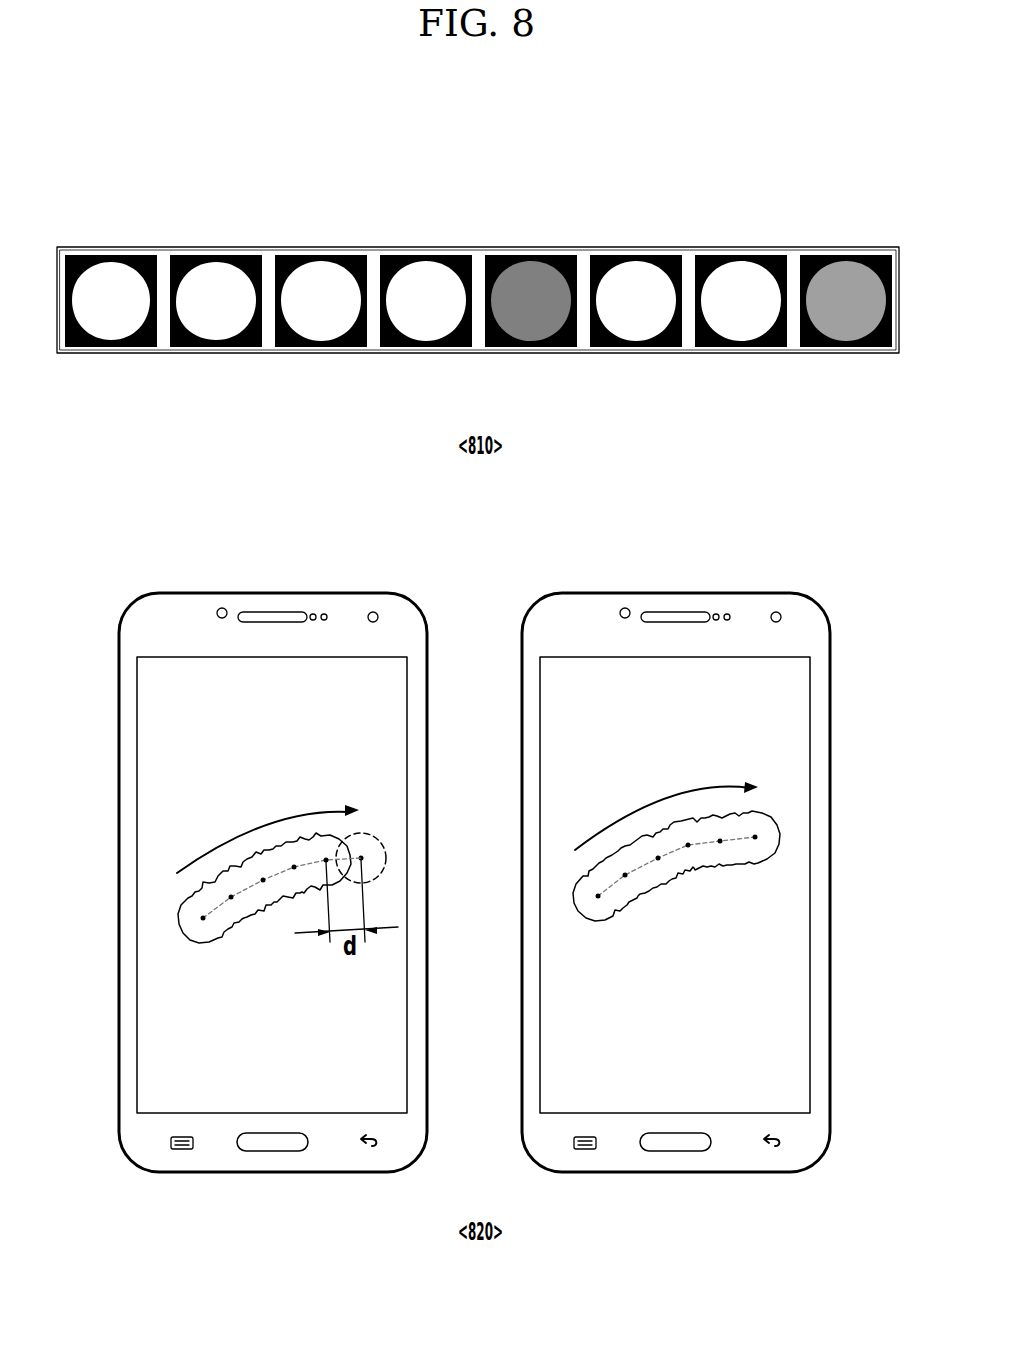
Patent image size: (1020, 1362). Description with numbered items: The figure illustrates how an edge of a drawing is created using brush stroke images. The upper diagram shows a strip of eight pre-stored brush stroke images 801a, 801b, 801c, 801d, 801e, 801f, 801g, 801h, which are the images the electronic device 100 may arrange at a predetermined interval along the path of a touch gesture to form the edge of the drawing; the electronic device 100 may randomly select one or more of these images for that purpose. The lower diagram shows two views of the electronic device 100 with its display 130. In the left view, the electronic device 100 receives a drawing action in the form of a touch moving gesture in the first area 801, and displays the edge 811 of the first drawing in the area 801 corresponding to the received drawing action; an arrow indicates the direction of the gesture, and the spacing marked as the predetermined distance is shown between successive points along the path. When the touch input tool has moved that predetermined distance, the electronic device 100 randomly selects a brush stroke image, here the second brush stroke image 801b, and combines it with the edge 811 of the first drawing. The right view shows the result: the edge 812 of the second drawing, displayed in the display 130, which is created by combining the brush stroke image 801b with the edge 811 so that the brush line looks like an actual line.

The electronic device 100 is at (415, 605).
The display 130 is at (330, 657).
The first area 801 is at (195, 905).
The first brush stroke image 801a is at (118, 347).
The second brush stroke image 801b is at (222, 347).
The third brush stroke image 801c is at (327, 347).
The fourth brush stroke image 801d is at (432, 347).
The fifth brush stroke image 801e is at (537, 347).
The sixth brush stroke image 801f is at (642, 347).
The seventh brush stroke image 801g is at (747, 347).
The eighth brush stroke image 801h is at (852, 347).
The edge of the first drawing 811 is at (187, 930).
The edge of the second drawing 812 is at (767, 860).